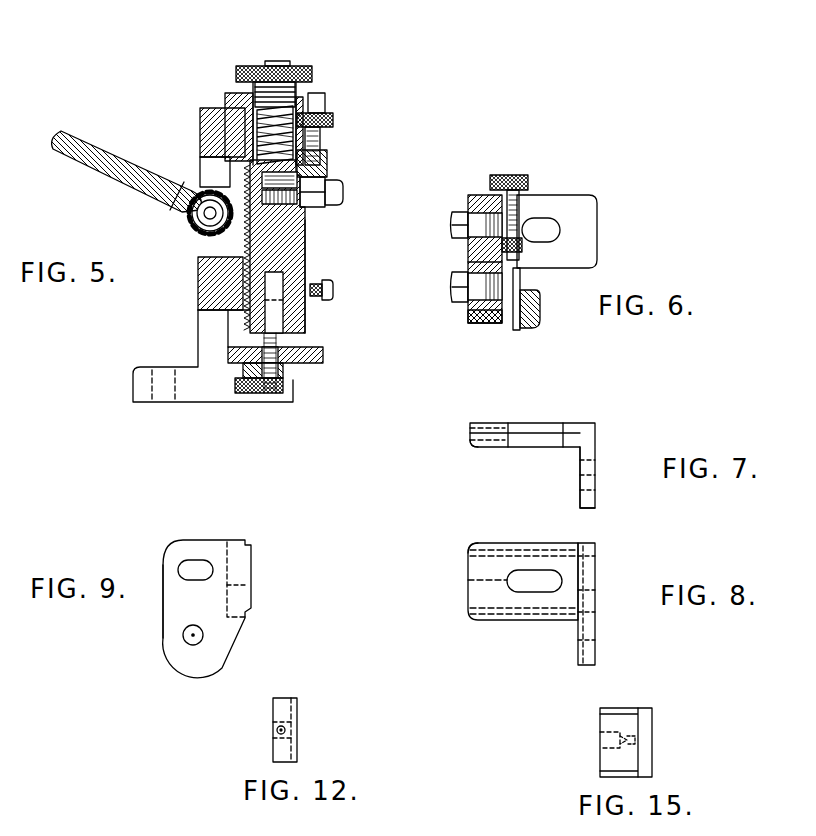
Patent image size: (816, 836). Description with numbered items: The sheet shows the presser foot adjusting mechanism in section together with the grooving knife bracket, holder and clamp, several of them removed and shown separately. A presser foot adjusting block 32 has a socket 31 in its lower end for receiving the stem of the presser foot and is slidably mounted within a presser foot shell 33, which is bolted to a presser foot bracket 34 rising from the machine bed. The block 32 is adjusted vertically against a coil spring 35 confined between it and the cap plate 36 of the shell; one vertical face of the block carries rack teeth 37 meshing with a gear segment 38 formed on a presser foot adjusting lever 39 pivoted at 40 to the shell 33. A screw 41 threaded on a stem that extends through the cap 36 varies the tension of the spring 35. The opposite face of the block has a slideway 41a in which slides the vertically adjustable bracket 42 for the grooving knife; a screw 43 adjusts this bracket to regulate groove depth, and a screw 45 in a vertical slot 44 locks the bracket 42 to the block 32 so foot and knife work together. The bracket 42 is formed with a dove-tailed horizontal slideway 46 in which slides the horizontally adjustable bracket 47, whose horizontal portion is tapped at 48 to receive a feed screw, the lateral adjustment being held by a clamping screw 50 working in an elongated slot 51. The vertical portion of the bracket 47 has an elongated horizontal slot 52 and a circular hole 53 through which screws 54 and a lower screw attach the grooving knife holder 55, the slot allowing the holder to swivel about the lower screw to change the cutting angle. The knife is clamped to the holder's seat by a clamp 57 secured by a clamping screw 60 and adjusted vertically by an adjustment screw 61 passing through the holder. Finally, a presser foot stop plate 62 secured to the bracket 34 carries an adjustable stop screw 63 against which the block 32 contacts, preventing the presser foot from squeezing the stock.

In FIG. 5, the socket 31 is at (276, 337).
In FIG. 5, the presser foot adjusting block 32 is at (272, 247).
In FIG. 5, the presser foot shell 33 is at (198, 273).
In FIG. 5, the presser foot bracket 34 is at (208, 339).
In FIG. 5, the coil spring 35 is at (206, 109).
In FIG. 5, the cap plate 36 is at (232, 93).
In FIG. 5, the rack teeth 37 is at (244, 296).
In FIG. 5, the gear segment 38 is at (205, 243).
In FIG. 5, the presser foot adjusting lever 39 is at (131, 161).
In FIG. 5, the pivot 40 is at (207, 213).
In FIG. 5, the screw 41 is at (248, 66).
In FIG. 5, the slideway 41a is at (308, 218).
In FIG. 5, the vertically adjustable bracket 42 is at (306, 257).
In FIG. 5, the screw 43 is at (332, 113).
In FIG. 5, the vertical slot 44 is at (318, 176).
In FIG. 5, the screw 45 is at (345, 192).
In FIG. 5, the horizontal slideway 46 is at (320, 313).
In FIG. 6, the horizontally adjustable bracket 47 is at (470, 195).
In FIG. 7, the horizontally adjustable bracket 47 is at (508, 449).
In FIG. 8, the horizontally adjustable bracket 47 is at (523, 561).
In FIG. 9, the horizontally adjustable bracket 47 is at (226, 622).
In FIG. 7, the tapped hole 48 is at (478, 448).
In FIG. 8, the tapped hole 48 is at (466, 588).
In FIG. 9, the tapped hole 48 is at (255, 574).
In FIG. 5, the clamping screw 50 is at (334, 290).
In FIG. 6, the elongated slot 51 is at (545, 228).
In FIG. 7, the elongated slot 51 is at (530, 426).
In FIG. 8, the elongated slot 51 is at (528, 580).
In FIG. 9, the elongated slot 51 is at (241, 584).
In FIG. 7, the elongated horizontal slot 52 is at (596, 466).
In FIG. 8, the elongated horizontal slot 52 is at (598, 573).
In FIG. 9, the elongated horizontal slot 52 is at (190, 570).
In FIG. 7, the circular hole 53 is at (590, 482).
In FIG. 8, the circular hole 53 is at (598, 636).
In FIG. 9, the circular hole 53 is at (193, 638).
In FIG. 6, the screw 54 is at (458, 225).
In FIG. 6, the grooving knife holder 55 is at (505, 322).
In FIG. 15, the grooving knife holder 55 is at (607, 756).
In FIG. 6, the clamp 57 is at (528, 279).
In FIG. 12, the clamp 57 is at (275, 712).
In FIG. 6, the clamping screw 60 is at (502, 247).
In FIG. 6, the adjustment screw 61 is at (521, 178).
In FIG. 5, the presser foot stop plate 62 is at (312, 364).
In FIG. 5, the adjustable stop screw 63 is at (253, 393).